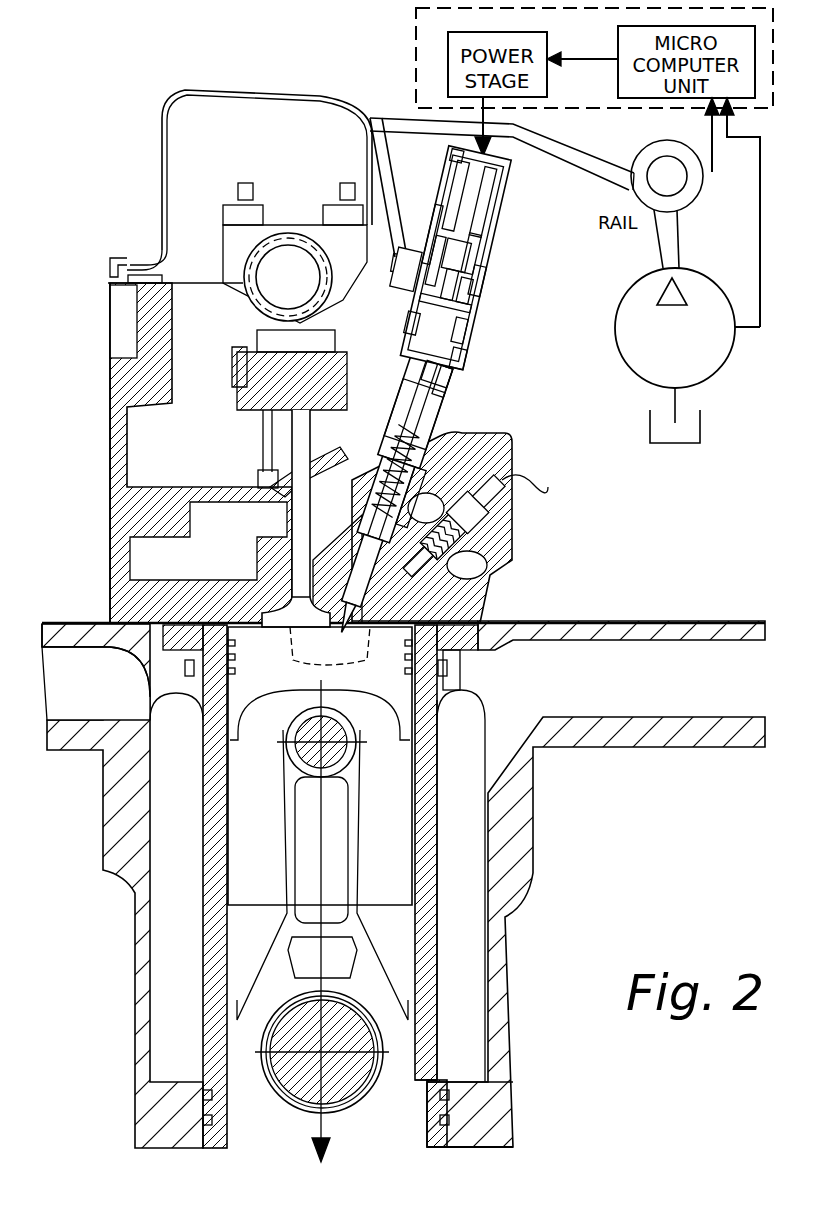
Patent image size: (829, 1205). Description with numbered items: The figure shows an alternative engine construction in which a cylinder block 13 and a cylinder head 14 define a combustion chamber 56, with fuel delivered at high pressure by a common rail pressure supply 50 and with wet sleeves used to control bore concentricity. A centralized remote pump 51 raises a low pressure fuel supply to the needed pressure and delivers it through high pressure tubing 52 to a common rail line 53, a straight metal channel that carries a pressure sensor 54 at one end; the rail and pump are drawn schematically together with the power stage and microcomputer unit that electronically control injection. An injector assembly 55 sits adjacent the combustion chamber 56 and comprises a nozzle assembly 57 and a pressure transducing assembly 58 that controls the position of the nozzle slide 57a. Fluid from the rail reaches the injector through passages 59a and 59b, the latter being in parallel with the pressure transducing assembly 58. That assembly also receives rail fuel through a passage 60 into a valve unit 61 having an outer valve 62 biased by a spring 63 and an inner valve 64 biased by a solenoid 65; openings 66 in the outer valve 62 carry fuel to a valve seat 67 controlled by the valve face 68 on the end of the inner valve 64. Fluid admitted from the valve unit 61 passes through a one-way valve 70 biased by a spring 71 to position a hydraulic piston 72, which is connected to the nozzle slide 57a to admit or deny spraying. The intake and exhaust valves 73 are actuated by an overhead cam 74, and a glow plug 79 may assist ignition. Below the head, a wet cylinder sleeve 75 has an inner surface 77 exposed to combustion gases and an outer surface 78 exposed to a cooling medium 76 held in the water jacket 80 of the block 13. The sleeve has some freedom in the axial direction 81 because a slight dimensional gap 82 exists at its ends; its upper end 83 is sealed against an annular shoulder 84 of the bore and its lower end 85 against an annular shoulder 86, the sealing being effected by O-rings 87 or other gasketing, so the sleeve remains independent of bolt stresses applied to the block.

The cylinder block 13 is at (122, 812).
The cylinder head 14 is at (124, 375).
The common rail pressure supply 50 is at (630, 237).
The pump 51 is at (615, 340).
The high pressure tubing 52 is at (678, 236).
The common rail line 53 is at (633, 186).
The pressure sensor 54 is at (692, 193).
The injector assembly 55 is at (524, 196).
The combustion chamber 56 is at (320, 766).
The nozzle assembly 57 is at (440, 607).
The nozzle slide 57a is at (405, 490).
The pressure transducing assembly 58 is at (438, 368).
The passage 59a is at (558, 121).
The passage 59b is at (384, 212).
The passage 60 is at (425, 240).
The valve unit 61 is at (478, 278).
The outer valve 62 is at (457, 284).
The spring 63 is at (467, 245).
The inner valve 64 is at (449, 200).
The solenoid 65 is at (440, 240).
The openings 66 is at (392, 262).
The valve seat 67 is at (448, 326).
The valve face 68 is at (405, 318).
The one-way valve 70 is at (455, 356).
The spring 71 is at (447, 371).
The hydraulic piston 72 is at (430, 398).
The intake and exhaust valves 73 is at (284, 612).
The overhead cam 74 is at (268, 270).
The wet cylinder sleeve 75 is at (483, 727).
The cooling medium 76 is at (468, 885).
The inner surface 77 is at (415, 930).
The outer surface 78 is at (437, 843).
The glow plug 79 is at (506, 553).
The water jacket 80 is at (500, 950).
The axial direction 81 is at (326, 1125).
The dimensional gap 82 is at (462, 618).
The upper end 83 is at (446, 688).
The annular shoulder 84 is at (478, 651).
The lower end 85 is at (432, 1082).
The annular shoulder 86 is at (478, 1098).
The O-rings 87 is at (185, 668).